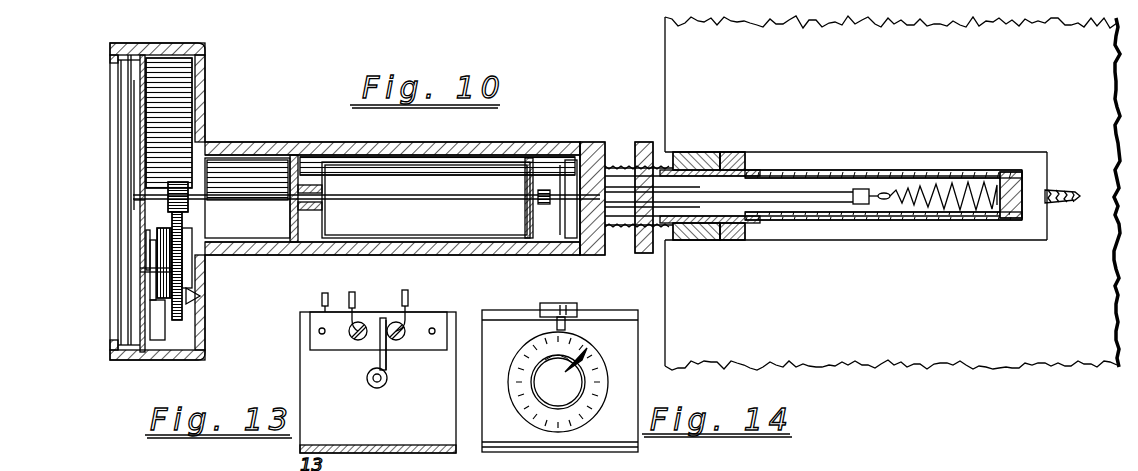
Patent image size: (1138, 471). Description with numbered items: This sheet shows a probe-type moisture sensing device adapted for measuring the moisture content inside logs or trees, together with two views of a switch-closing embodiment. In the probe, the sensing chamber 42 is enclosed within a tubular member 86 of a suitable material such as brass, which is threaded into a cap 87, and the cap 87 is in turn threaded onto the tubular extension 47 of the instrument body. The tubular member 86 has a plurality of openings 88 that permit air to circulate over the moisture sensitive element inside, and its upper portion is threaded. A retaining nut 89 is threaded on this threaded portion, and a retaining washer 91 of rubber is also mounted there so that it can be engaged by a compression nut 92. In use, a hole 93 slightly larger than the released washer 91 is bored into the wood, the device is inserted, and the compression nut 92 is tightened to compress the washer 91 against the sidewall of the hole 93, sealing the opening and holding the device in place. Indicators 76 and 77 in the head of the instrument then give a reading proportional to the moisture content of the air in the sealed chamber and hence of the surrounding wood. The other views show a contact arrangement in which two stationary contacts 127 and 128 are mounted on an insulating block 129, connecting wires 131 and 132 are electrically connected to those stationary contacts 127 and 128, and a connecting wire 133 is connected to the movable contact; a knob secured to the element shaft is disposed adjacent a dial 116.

In FIG. 10, the indicator 76 is at (128, 152).
In FIG. 10, the indicator 77 is at (138, 265).
In FIG. 10, the tubular extension 47 is at (521, 150).
In FIG. 10, the cap 87 is at (603, 252).
In FIG. 10, the compression nut 92 is at (640, 142).
In FIG. 10, the retaining washer 91 is at (690, 165).
In FIG. 10, the retaining nut 89 is at (735, 160).
In FIG. 10, the sensing chamber 42 is at (810, 205).
In FIG. 10, the tubular member 86 is at (895, 222).
In FIG. 10, the openings 88 is at (953, 222).
In FIG. 10, the hole 93 is at (1022, 228).
In FIG. 13, the insulating block 129 is at (335, 340).
In FIG. 13, the connecting wire 131 is at (352, 292).
In FIG. 13, the connecting wire 132 is at (407, 290).
In FIG. 13, the connecting wire 133 is at (324, 292).
In FIG. 13, the stationary contact 127 is at (368, 332).
In FIG. 13, the stationary contact 128 is at (388, 345).
In FIG. 14, the dial 116 is at (590, 340).